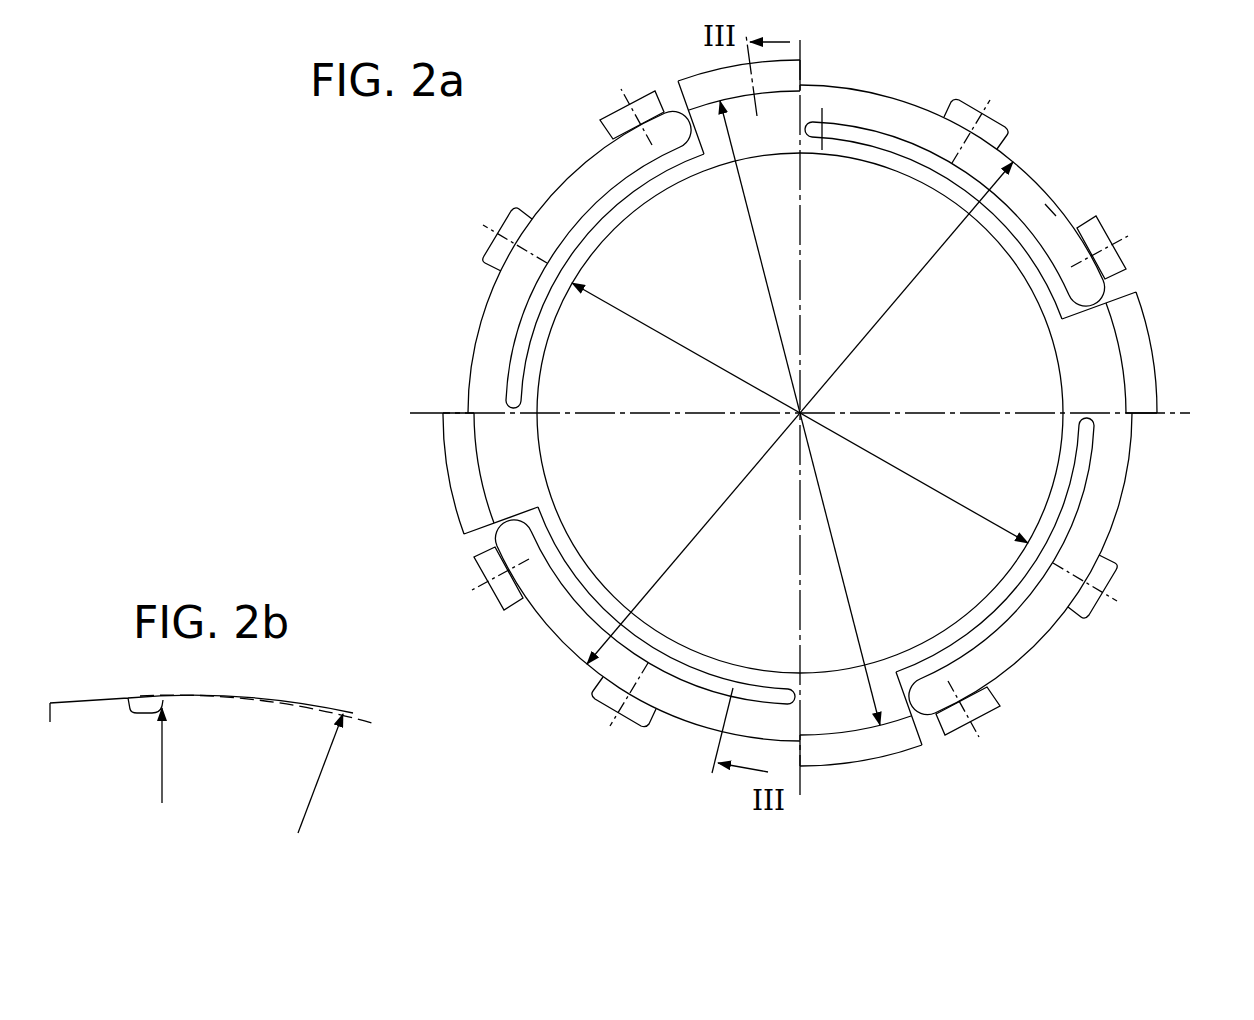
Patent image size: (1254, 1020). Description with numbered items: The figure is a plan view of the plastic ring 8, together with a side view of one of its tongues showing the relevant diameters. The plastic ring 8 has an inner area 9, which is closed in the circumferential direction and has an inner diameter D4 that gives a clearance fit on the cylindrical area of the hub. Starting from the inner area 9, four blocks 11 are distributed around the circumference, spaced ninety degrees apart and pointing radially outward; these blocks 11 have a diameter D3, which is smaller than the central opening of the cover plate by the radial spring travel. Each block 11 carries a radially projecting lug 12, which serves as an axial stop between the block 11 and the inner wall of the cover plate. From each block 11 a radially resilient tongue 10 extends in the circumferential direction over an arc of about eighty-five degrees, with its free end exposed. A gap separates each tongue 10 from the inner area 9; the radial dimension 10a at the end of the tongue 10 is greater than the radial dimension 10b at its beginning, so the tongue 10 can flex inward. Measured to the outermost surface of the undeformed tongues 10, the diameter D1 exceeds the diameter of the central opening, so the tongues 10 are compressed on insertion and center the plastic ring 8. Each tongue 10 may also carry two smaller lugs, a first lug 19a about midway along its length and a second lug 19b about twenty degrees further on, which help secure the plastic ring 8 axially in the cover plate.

In FIG. 2A, the plastic ring 8 is at (757, 396).
In FIG. 2A, the inner area 9 is at (851, 148).
In FIG. 2A, the tongue 10 is at (997, 167).
In FIG. 2A, the radial dimension 10a is at (1060, 283).
In FIG. 2A, the radial dimension 10b is at (826, 128).
In FIG. 2A, the block 11 is at (1108, 396).
In FIG. 2A, the lug 12 is at (1137, 347).
In FIG. 2A, the first lug 19a is at (1089, 613).
In FIG. 2A, the second lug 19b is at (989, 708).
In FIG. 2A, the diameter D1 is at (800, 413).
In FIG. 2B, the diameter D1 is at (318, 785).
In FIG. 2A, the diameter D3 is at (800, 413).
In FIG. 2B, the diameter D3 is at (163, 773).
In FIG. 2A, the diameter D4 is at (800, 413).